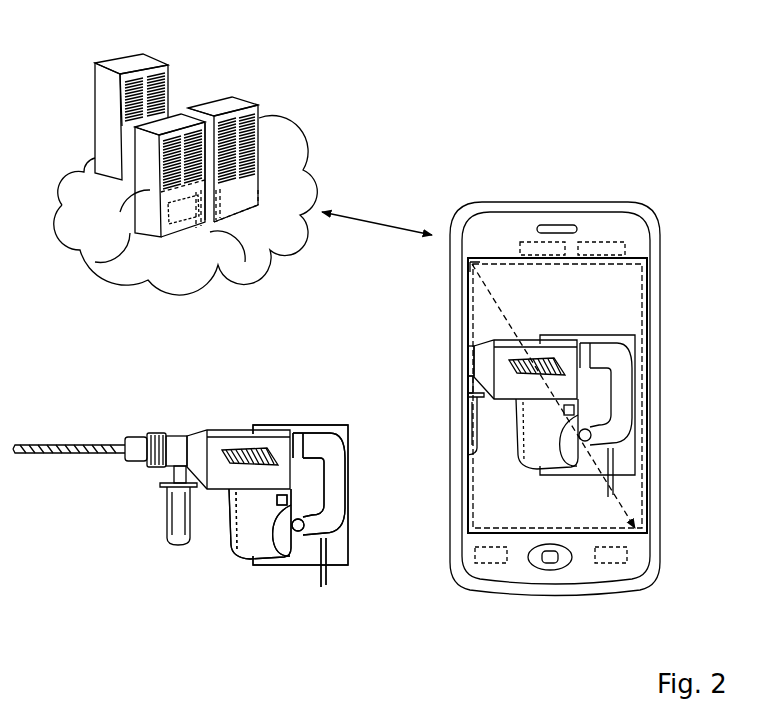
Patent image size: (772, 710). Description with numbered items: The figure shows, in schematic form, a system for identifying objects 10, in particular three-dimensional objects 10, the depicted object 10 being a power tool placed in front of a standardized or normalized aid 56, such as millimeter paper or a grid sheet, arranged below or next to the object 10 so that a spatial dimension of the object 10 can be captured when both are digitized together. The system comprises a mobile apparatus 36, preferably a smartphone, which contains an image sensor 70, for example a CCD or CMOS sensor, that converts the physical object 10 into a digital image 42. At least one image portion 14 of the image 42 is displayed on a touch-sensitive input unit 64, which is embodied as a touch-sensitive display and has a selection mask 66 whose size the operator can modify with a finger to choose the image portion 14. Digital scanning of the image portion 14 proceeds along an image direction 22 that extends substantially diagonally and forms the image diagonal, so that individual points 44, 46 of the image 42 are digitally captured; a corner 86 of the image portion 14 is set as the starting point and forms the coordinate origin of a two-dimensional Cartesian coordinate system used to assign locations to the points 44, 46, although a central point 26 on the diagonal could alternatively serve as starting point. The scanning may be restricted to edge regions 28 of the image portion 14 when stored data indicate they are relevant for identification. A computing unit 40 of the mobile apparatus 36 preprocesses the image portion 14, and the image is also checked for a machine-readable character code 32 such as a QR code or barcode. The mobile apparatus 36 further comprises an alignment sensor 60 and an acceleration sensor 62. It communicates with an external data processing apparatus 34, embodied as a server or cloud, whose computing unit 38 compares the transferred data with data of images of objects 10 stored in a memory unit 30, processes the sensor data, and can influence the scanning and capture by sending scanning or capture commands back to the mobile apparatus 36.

The object 10 is at (180, 487).
The image portion 14 is at (525, 396).
The image direction 22 is at (620, 498).
The central point 26 is at (480, 392).
The edge region 28 is at (472, 250).
The memory unit 30 is at (118, 161).
The machine-readable character code 32 is at (276, 510).
The data processing apparatus 34 is at (167, 157).
The mobile apparatus 36 is at (525, 391).
The computing unit 38 is at (176, 212).
The computing unit 40 is at (598, 247).
The image 42 is at (511, 417).
The point 44 is at (482, 396).
The point 46 is at (518, 358).
The aid 56 is at (268, 430).
The alignment sensor 60 is at (492, 564).
The acceleration sensor 62 is at (612, 564).
The touch-sensitive input unit 64 is at (637, 258).
The selection mask 66 is at (525, 395).
The image sensor 70 is at (538, 247).
The corner 86 is at (470, 265).